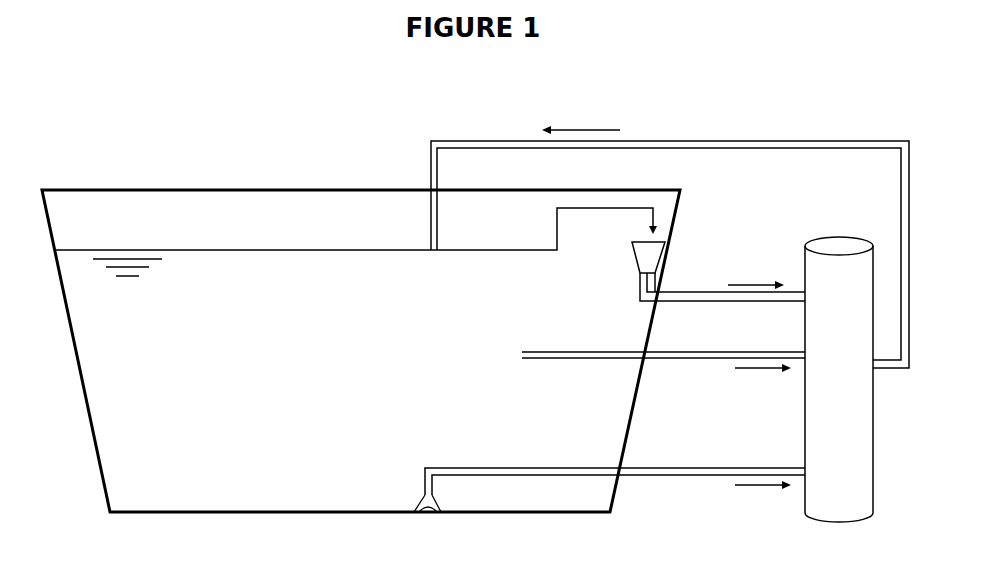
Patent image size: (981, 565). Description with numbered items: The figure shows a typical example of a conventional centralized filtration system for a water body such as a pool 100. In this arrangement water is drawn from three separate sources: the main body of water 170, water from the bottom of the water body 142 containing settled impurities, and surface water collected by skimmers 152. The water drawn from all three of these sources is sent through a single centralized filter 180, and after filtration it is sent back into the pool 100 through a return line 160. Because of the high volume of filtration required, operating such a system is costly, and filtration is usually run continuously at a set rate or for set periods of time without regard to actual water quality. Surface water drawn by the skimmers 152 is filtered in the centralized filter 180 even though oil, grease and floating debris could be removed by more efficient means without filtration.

The pool 100 is at (361, 351).
The water from the bottom of the water body 142 is at (372, 511).
The skimmers 152 is at (633, 260).
The return line 160 is at (670, 244).
The main body of water 170 is at (644, 359).
The centralized filter 180 is at (839, 379).